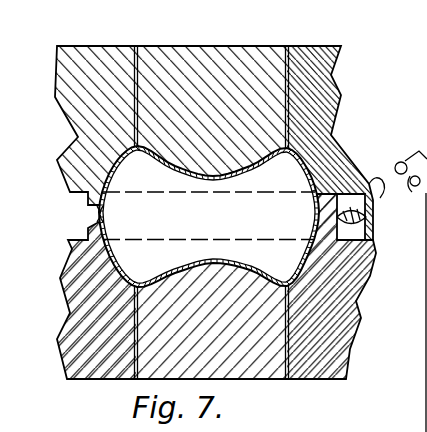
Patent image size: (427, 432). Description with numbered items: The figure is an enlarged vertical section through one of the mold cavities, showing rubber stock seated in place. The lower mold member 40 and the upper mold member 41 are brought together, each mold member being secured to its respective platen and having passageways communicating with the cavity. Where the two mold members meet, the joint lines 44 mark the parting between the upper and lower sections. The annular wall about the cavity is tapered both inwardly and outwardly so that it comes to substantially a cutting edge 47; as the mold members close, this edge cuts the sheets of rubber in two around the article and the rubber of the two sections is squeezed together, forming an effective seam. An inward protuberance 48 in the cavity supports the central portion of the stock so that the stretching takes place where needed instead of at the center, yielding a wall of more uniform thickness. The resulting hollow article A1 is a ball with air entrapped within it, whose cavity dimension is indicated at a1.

The mold member 40 is at (345, 353).
The mold member 41 is at (339, 101).
The die section parting joints 44 is at (289, 47).
The cutting edge 47 is at (97, 214).
The inward protuberance 48 is at (227, 176).
The cavity dimension line a1 is at (313, 216).
The hollow article A1 is at (279, 277).